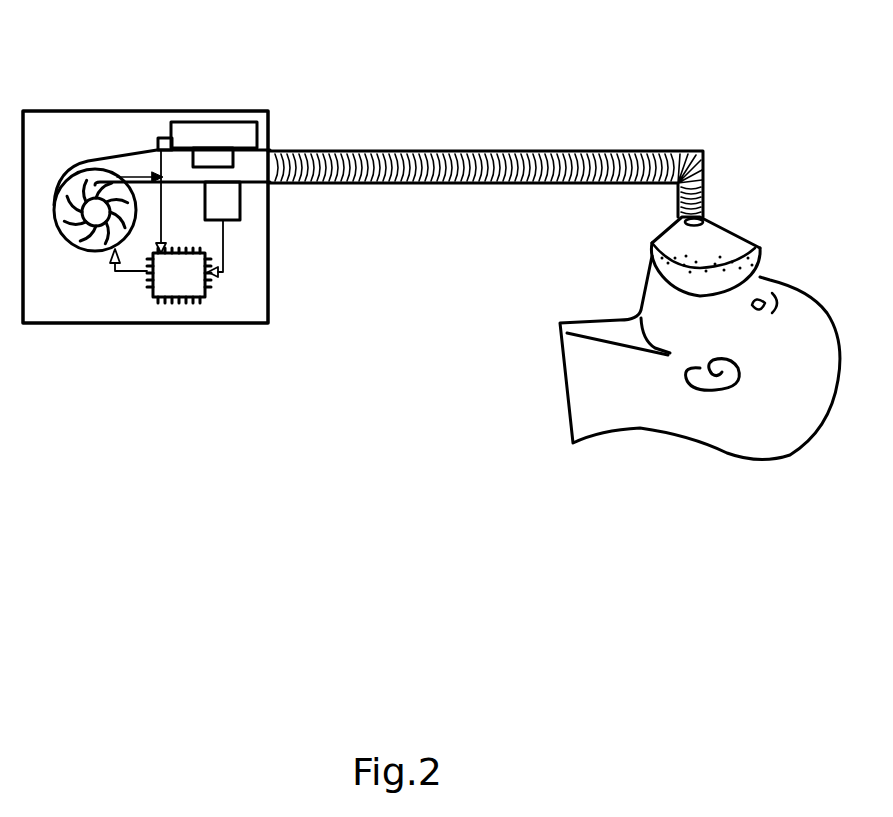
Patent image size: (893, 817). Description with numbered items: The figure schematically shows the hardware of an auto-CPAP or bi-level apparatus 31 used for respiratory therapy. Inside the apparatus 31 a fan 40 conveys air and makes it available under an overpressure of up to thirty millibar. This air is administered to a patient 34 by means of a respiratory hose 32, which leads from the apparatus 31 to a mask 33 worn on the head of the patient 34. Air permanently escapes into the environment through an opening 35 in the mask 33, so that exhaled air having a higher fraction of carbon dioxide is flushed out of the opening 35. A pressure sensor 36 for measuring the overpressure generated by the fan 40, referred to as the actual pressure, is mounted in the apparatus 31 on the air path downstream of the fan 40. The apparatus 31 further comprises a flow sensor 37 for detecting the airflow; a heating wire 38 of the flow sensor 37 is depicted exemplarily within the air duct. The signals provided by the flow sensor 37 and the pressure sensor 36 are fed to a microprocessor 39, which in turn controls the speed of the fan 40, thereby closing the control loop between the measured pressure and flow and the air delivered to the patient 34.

The auto-CPAP or bi-level apparatus 31 is at (48, 153).
The respiratory hose 32 is at (362, 183).
The mask 33 is at (680, 252).
The patient 34 is at (742, 423).
The opening 35 is at (704, 218).
The pressure sensor 36 is at (217, 212).
The flow sensor 37 is at (223, 133).
The heating wire 38 is at (207, 163).
The microprocessor 39 is at (172, 283).
The fan 40 is at (98, 222).